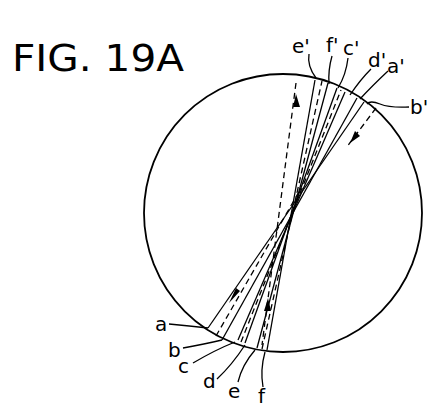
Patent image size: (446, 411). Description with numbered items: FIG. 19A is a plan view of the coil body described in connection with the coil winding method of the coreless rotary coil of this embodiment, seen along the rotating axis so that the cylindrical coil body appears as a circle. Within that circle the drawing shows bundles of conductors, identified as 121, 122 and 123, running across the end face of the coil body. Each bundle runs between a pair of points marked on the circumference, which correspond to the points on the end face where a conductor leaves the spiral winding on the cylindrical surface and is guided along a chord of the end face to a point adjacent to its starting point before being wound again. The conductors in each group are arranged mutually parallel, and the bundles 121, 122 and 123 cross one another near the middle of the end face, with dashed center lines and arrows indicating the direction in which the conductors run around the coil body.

The light ray bundle 121 is at (364, 102).
The light ray bundle 122 is at (345, 92).
The light ray bundle 123 is at (320, 79).